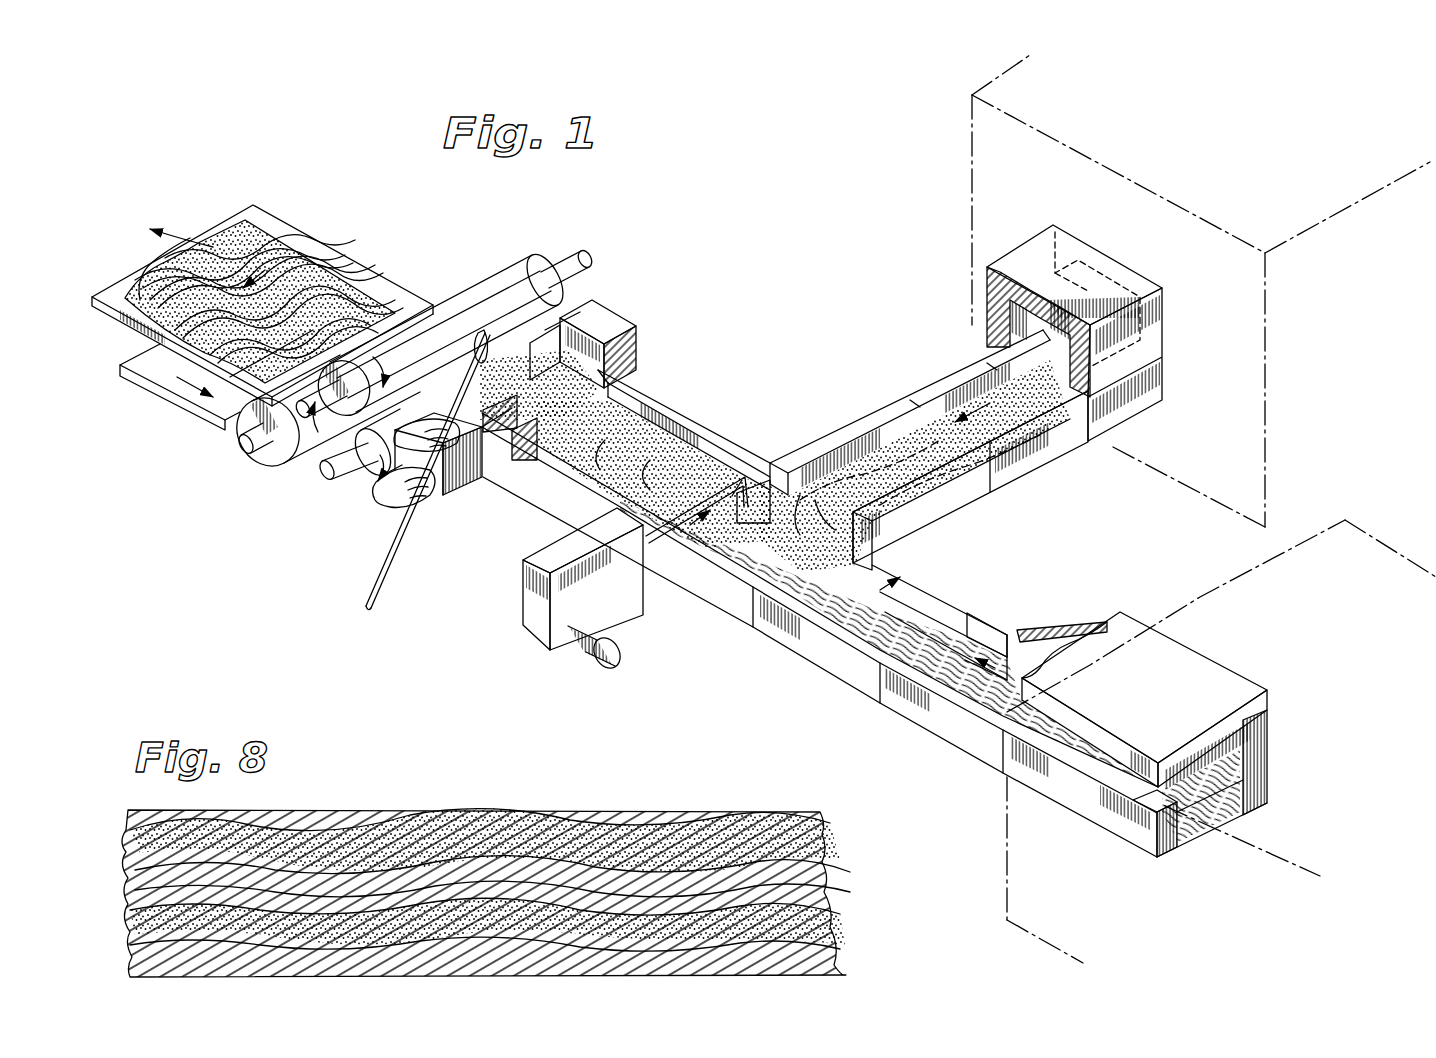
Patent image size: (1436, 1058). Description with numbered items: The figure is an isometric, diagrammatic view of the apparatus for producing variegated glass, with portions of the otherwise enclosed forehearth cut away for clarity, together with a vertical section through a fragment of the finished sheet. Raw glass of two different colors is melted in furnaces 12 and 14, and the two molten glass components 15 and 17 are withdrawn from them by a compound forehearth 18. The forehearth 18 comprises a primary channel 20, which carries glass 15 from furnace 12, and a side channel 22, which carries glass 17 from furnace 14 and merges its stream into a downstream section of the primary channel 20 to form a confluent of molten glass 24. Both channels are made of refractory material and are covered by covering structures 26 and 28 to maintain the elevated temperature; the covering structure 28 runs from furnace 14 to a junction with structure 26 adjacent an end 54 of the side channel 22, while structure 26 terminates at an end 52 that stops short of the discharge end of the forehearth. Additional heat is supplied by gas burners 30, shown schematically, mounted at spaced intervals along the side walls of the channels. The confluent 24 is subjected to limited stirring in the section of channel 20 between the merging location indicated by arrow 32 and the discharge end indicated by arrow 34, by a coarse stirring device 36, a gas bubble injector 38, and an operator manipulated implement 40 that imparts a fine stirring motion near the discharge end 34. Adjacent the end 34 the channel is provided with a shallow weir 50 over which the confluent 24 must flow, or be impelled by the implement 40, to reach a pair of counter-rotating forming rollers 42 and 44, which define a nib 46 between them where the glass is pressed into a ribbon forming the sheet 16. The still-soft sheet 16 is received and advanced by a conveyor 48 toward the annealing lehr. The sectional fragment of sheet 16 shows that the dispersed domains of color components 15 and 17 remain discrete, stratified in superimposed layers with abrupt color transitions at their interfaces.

In FIG. 1, the furnace 12 is at (1221, 741).
In FIG. 1, the furnace 14 is at (1201, 291).
In FIG. 1, the glass component 15 is at (895, 640).
In FIG. 8, the glass component 15 is at (340, 860).
In FIG. 1, the sheet 16 is at (267, 260).
In FIG. 8, the sheet 16 is at (512, 808).
In FIG. 1, the glass component 17 is at (900, 450).
In FIG. 8, the glass component 17 is at (470, 870).
In FIG. 1, the compound forehearth 18 is at (950, 572).
In FIG. 1, the primary channel 20 is at (830, 615).
In FIG. 1, the side channel 22 is at (952, 396).
In FIG. 1, the confluent of molten glass 24 is at (648, 460).
In FIG. 1, the covering structure 26 is at (1162, 607).
In FIG. 1, the covering structure 28 is at (1022, 256).
In FIG. 1, the gas burners 30 is at (1093, 563).
In FIG. 1, the arrow indicating merging location 32 is at (740, 575).
In FIG. 1, the discharge end 34 is at (580, 308).
In FIG. 1, the coarse stirring device 36 is at (663, 552).
In FIG. 1, the gas bubble injector 38 is at (590, 345).
In FIG. 1, the operator manipulated implement 40 is at (482, 335).
In FIG. 1, the forming roller 42 is at (238, 436).
In FIG. 1, the forming roller 44 is at (362, 472).
In FIG. 1, the nib 46 is at (330, 472).
In FIG. 1, the conveyor 48 is at (125, 330).
In FIG. 1, the weir 50 is at (540, 325).
In FIG. 1, the end of covering structure 52 is at (468, 483).
In FIG. 1, the end of side channel 54 is at (862, 543).